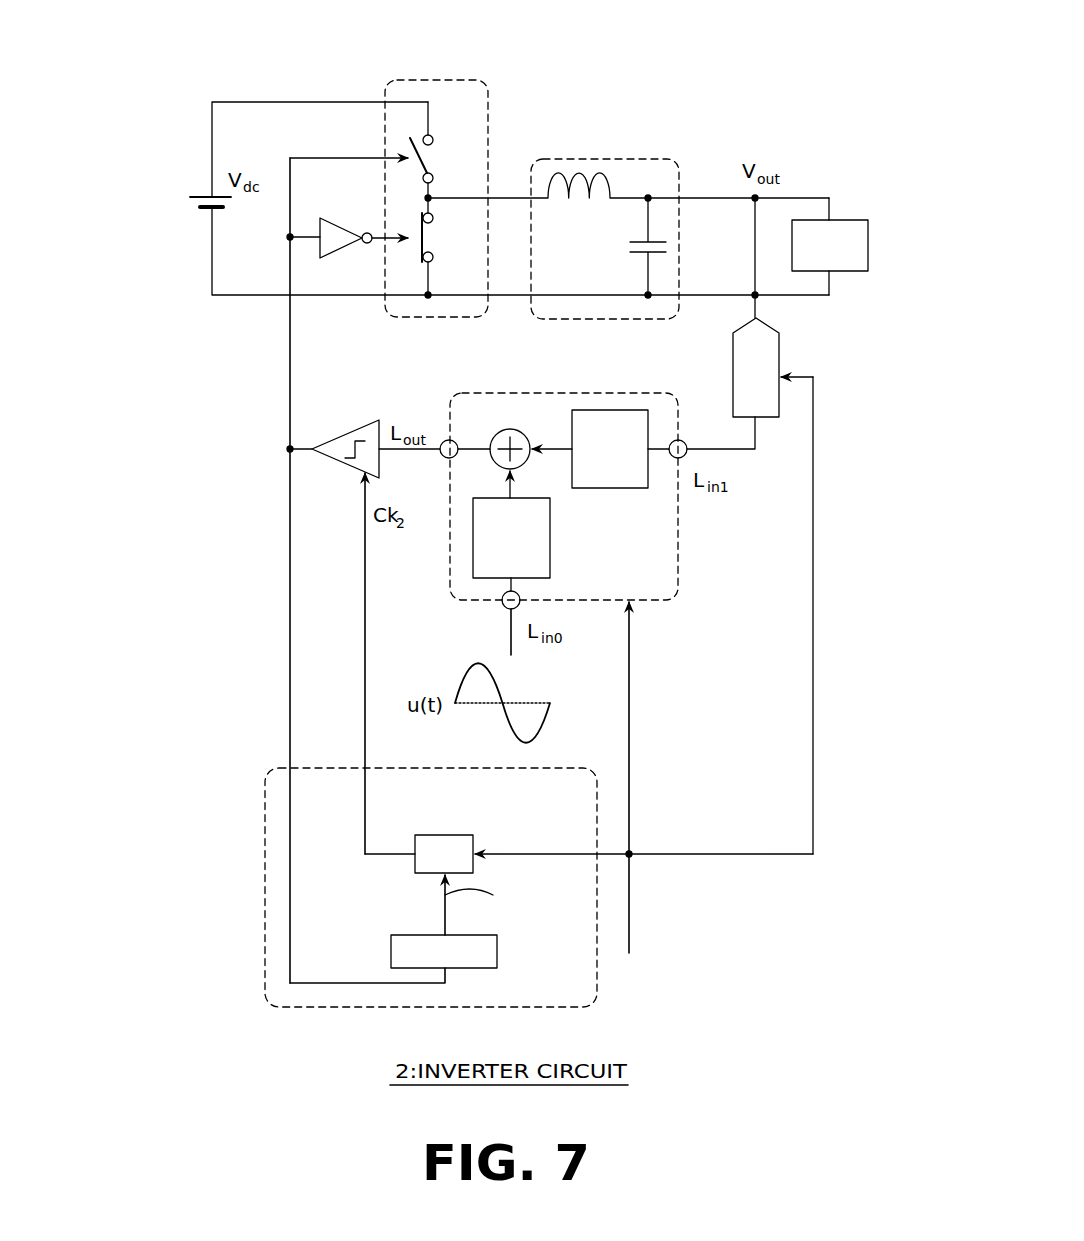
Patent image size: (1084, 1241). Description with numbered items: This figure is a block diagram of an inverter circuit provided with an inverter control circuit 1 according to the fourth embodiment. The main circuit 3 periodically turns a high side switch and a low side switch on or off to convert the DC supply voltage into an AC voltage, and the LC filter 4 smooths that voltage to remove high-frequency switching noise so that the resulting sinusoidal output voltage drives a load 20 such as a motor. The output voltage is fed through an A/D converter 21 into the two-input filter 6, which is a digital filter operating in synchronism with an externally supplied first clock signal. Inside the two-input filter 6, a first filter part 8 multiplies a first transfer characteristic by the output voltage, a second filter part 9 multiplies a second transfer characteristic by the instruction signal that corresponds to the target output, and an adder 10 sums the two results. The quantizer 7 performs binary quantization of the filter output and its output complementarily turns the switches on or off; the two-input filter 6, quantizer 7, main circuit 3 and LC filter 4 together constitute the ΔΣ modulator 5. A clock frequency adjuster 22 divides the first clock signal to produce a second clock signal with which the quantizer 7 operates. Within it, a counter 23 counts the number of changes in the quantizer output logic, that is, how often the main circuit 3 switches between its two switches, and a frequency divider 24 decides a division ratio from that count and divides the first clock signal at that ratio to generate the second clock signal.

The inverter control circuit 1 is at (250, 570).
The main circuit 3 is at (432, 80).
The LC filter 4 is at (604, 159).
The ΔΣ modulator 5 is at (720, 941).
The two-input filter 6 is at (564, 473).
The quantizer 7 is at (343, 432).
The first filter part 8 is at (623, 488).
The second filter part 9 is at (550, 560).
The adder 10 is at (505, 429).
The load 20 is at (850, 218).
The A/D converter 21 is at (780, 349).
The clock frequency adjuster 22 is at (479, 740).
The counter 23 is at (391, 948).
The frequency divider 24 is at (432, 835).